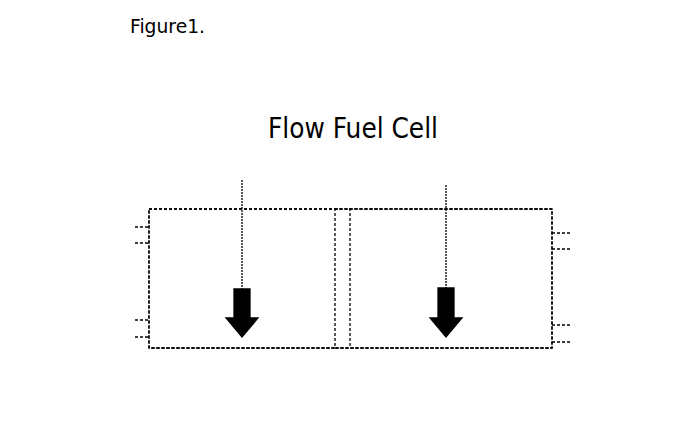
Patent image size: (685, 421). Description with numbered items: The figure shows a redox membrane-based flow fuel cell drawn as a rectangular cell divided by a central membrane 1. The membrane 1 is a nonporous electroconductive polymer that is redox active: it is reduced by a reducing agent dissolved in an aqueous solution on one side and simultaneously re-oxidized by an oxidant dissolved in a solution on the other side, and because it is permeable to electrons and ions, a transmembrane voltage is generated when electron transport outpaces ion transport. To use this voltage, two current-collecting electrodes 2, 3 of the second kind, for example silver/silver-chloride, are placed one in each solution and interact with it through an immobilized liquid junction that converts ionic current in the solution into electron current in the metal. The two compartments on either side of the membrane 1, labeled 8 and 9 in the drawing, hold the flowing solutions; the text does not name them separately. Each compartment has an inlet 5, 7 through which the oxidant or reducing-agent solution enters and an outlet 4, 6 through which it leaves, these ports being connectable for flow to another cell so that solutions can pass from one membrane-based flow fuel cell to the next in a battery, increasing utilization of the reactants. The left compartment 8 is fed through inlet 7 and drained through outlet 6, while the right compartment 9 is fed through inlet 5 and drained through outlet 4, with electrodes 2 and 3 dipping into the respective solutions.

The membrane 1 is at (350, 262).
The current-collecting electrode 2 is at (240, 180).
The current-collecting electrode 3 is at (449, 185).
The outlet 4 is at (583, 242).
The inlet 5 is at (573, 335).
The outlet 6 is at (130, 235).
The inlet 7 is at (132, 326).
The anode compartment 8 is at (242, 278).
The cathode compartment 9 is at (451, 278).